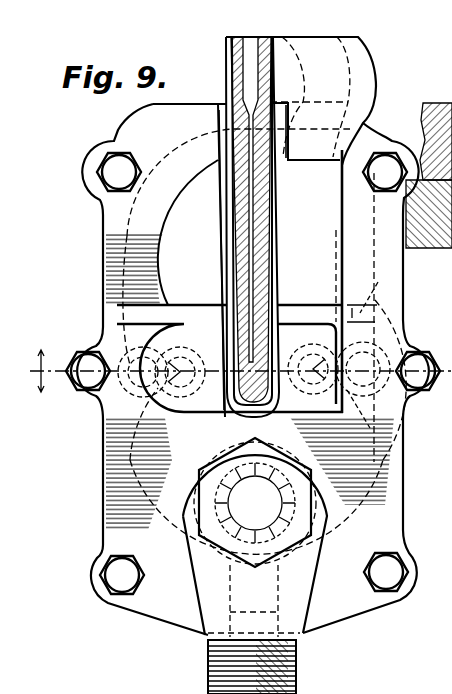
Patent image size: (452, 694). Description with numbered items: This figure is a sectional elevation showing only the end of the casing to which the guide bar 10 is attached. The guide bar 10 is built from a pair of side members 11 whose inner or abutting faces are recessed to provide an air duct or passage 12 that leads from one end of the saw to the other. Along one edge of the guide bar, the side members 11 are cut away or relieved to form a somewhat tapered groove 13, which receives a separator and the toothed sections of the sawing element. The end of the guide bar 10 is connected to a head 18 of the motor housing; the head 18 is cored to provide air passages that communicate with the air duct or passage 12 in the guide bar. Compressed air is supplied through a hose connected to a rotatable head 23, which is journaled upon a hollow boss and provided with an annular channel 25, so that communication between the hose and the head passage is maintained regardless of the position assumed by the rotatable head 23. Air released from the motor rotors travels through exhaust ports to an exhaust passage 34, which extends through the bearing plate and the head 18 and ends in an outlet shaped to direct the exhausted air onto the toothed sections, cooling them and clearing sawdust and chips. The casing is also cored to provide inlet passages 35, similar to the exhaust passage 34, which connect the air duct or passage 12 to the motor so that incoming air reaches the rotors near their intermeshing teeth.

The guide bar 10 is at (231, 371).
The side members 11 is at (263, 253).
The air duct or passage 12 is at (249, 218).
The groove 13 is at (249, 50).
The head 18 is at (393, 493).
The rotatable head 23 is at (312, 548).
The annular channel 25 is at (222, 545).
The exhaust passage 34 is at (383, 355).
The inlet passages 35 is at (128, 393).